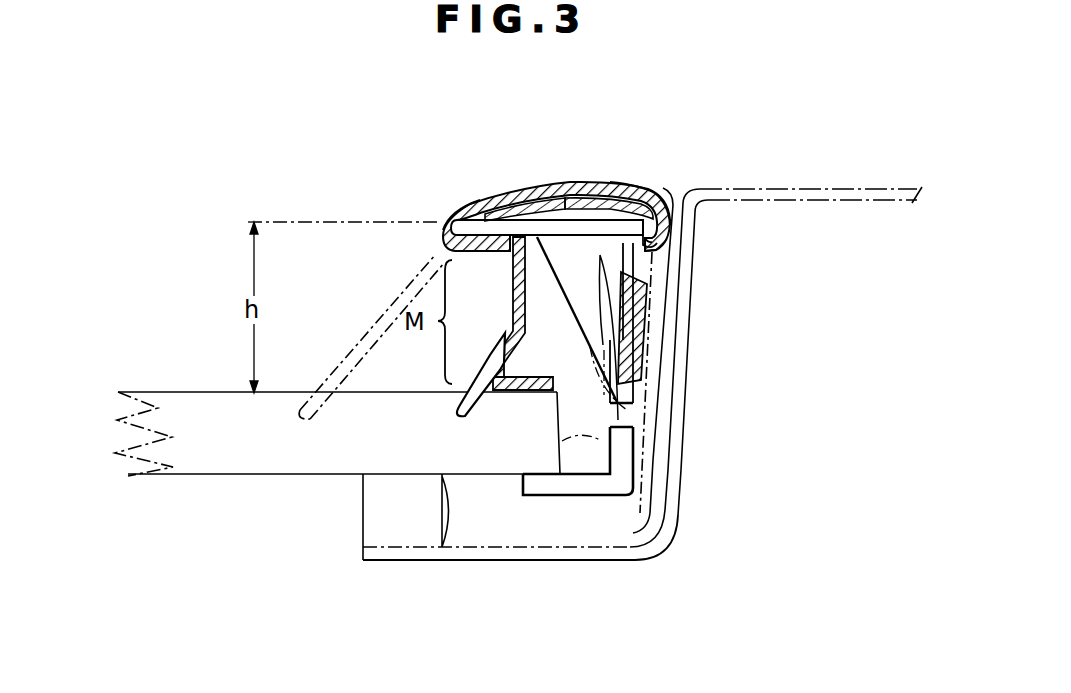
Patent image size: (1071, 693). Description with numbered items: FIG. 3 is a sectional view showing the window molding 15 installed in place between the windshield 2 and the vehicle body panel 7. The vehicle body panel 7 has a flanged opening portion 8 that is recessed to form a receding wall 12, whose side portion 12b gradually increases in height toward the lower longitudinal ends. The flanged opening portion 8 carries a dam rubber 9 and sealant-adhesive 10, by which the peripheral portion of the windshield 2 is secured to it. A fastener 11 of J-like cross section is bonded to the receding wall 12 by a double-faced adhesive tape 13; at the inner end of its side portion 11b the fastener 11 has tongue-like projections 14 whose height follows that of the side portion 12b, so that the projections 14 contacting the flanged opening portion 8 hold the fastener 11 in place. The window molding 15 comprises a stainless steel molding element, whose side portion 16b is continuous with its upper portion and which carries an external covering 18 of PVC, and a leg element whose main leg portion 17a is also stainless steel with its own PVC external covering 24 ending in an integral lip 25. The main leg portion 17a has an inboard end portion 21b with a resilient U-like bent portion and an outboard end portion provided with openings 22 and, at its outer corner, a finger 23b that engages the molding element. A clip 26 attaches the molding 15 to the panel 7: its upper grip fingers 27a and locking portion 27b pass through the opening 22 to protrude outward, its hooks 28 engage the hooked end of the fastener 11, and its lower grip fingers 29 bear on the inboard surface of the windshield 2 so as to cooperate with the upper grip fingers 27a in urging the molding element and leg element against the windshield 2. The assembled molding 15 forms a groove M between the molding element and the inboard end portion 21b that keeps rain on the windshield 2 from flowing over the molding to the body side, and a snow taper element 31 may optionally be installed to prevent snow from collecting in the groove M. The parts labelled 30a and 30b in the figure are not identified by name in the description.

The windshield 2 is at (203, 392).
The vehicle body panel 7 is at (796, 188).
The flanged opening portion 8 is at (400, 557).
The dam rubber 9 is at (380, 521).
The sealant-adhesive 10 is at (533, 522).
The fastener 11 is at (644, 409).
The side portion 11b is at (650, 380).
The receding wall 12 is at (686, 357).
The side portion 12b is at (673, 468).
The double-faced adhesive tape 13 is at (675, 245).
The tongue-like projections 14 is at (636, 534).
The window molding 15 is at (554, 180).
The side portion 16b is at (495, 196).
The main leg portion 17a is at (537, 291).
The external covering 18 is at (648, 193).
The inboard end portion 21b is at (517, 393).
The openings 22 is at (533, 200).
The finger 23b is at (683, 194).
The external covering 24 is at (512, 301).
The lip 25 is at (458, 420).
The clip 26 is at (574, 324).
The upper grip fingers 27a is at (462, 197).
The locking portion 27b is at (630, 190).
The hooks 28 is at (640, 303).
The lower grip fingers 29 is at (570, 487).
The core flange 30a is at (450, 237).
The core bent end 30b is at (652, 255).
The snow taper element 31 is at (357, 335).